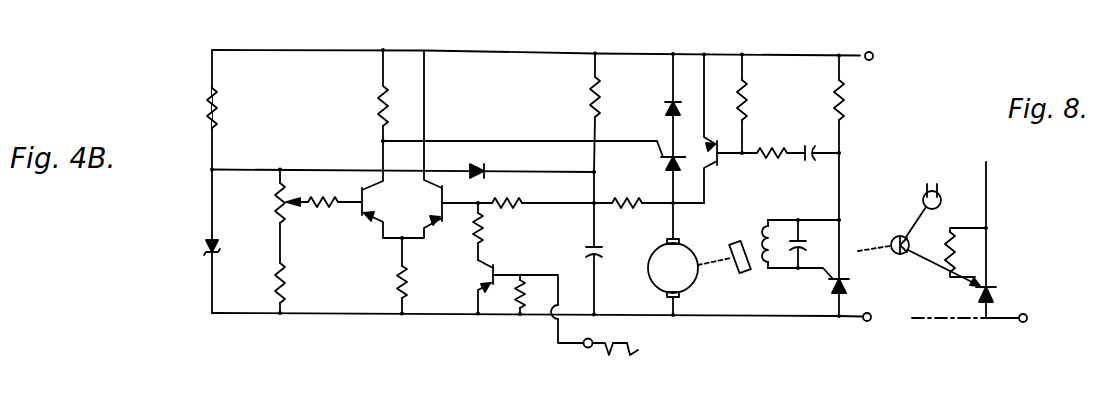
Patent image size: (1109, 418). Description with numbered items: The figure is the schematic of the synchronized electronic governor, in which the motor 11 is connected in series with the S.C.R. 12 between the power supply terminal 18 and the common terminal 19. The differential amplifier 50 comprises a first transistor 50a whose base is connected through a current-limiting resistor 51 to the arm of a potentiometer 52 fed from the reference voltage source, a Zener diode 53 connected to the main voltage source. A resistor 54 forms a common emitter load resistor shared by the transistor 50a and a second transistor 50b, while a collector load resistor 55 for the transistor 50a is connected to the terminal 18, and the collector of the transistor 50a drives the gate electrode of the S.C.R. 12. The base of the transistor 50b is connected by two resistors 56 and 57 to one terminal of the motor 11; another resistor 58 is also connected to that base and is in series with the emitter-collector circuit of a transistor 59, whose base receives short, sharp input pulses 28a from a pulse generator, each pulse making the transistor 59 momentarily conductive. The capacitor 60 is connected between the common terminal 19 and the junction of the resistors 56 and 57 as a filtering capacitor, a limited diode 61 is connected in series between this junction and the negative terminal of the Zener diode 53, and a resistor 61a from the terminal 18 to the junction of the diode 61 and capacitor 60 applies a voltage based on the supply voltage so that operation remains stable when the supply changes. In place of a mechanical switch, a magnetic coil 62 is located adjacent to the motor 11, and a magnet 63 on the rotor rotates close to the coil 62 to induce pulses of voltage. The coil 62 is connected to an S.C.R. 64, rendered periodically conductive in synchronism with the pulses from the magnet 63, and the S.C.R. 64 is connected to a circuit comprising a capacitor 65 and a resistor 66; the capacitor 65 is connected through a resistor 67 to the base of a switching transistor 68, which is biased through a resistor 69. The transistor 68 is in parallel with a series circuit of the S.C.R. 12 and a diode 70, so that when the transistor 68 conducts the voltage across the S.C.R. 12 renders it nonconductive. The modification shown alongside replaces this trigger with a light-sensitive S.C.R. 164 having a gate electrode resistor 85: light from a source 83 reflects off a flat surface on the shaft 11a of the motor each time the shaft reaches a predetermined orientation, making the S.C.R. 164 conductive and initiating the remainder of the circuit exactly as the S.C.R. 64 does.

In FIG. 4B, the motor 11 is at (648, 272).
In FIG. 8, the shaft 11a is at (903, 255).
In FIG. 4B, the S.C.R. 12 is at (660, 163).
In FIG. 4B, the power supply terminal 18 is at (874, 55).
In FIG. 4B, the common terminal 19 is at (864, 322).
In FIG. 8, the common terminal 19 is at (1026, 322).
In FIG. 4B, the input pulses 28a is at (638, 350).
In FIG. 4B, the differential amplifier 50 is at (355, 125).
In FIG. 4B, the first transistor 50a is at (372, 203).
In FIG. 4B, the second transistor 50b is at (443, 194).
In FIG. 4B, the current-limiting resistor 51 is at (310, 198).
In FIG. 4B, the potentiometer 52 is at (288, 217).
In FIG. 4B, the Zener diode 53 is at (214, 249).
In FIG. 4B, the common emitter load resistor 54 is at (403, 275).
In FIG. 4B, the collector load resistor 55 is at (379, 103).
In FIG. 4B, the resistor 56 is at (500, 203).
In FIG. 4B, the resistor 57 is at (637, 201).
In FIG. 4B, the resistor 58 is at (489, 227).
In FIG. 4B, the transistor 59 is at (497, 272).
In FIG. 4B, the capacitor 60 is at (598, 255).
In FIG. 4B, the limited diode 61 is at (476, 166).
In FIG. 4B, the resistor 61a is at (592, 110).
In FIG. 4B, the magnetic coil 62 is at (768, 218).
In FIG. 4B, the magnet 63 is at (740, 273).
In FIG. 4B, the S.C.R. 64 is at (836, 281).
In FIG. 4B, the capacitor 65 is at (818, 147).
In FIG. 4B, the resistor 66 is at (843, 98).
In FIG. 4B, the resistor 67 is at (775, 145).
In FIG. 4B, the switching transistor 68 is at (710, 163).
In FIG. 4B, the resistor 69 is at (746, 98).
In FIG. 4B, the diode 70 is at (664, 108).
In FIG. 8, the light source 83 is at (922, 197).
In FIG. 8, the resistor 85 is at (952, 249).
In FIG. 8, the light-sensitive S.C.R. 164 is at (1000, 295).